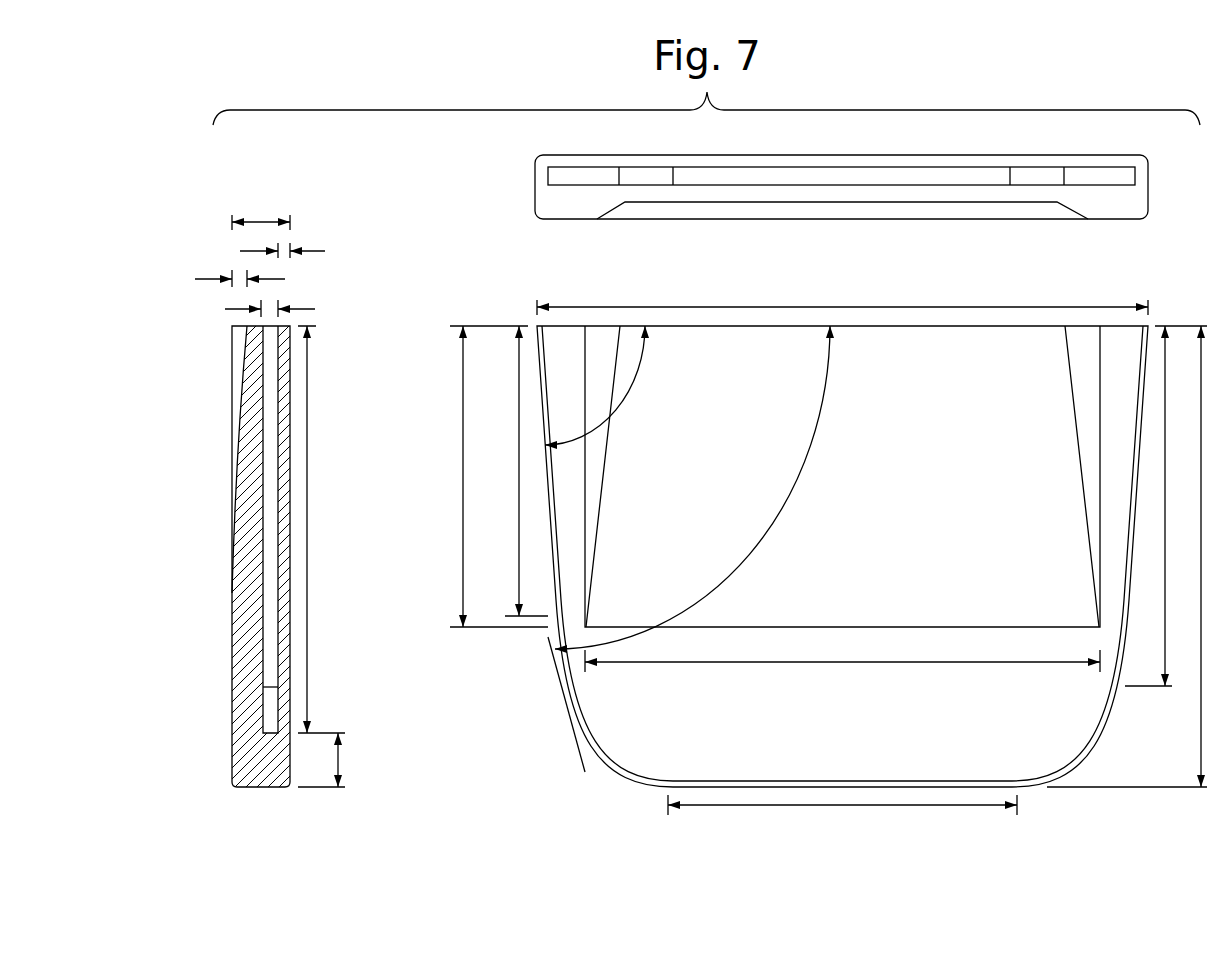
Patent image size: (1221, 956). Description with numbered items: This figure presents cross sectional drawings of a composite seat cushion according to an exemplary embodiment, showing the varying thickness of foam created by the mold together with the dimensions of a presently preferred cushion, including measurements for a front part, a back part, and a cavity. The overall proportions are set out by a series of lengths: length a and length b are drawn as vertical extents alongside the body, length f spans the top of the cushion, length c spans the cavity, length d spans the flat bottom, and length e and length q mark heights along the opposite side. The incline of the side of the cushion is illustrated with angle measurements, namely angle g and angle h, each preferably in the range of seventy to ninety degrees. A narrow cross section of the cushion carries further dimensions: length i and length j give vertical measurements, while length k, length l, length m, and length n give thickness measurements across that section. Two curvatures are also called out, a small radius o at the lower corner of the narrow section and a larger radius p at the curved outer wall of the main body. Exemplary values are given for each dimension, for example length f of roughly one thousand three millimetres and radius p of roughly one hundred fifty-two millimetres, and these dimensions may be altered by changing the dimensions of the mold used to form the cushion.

The length a is at (498, 476).
The length b is at (526, 471).
The length c is at (842, 669).
The length d is at (842, 815).
The length e is at (1131, 556).
The length f is at (842, 298).
The angle g is at (595, 385).
The angle h is at (692, 487).
The length i is at (321, 529).
The length j is at (327, 760).
The length k is at (261, 213).
The length l is at (288, 251).
The length m is at (249, 280).
The length n is at (277, 310).
The radius o is at (229, 787).
The radius p is at (1099, 751).
The length q is at (1153, 506).